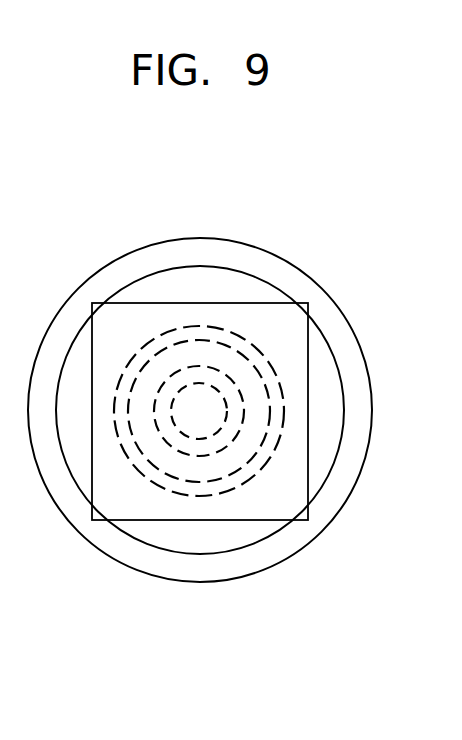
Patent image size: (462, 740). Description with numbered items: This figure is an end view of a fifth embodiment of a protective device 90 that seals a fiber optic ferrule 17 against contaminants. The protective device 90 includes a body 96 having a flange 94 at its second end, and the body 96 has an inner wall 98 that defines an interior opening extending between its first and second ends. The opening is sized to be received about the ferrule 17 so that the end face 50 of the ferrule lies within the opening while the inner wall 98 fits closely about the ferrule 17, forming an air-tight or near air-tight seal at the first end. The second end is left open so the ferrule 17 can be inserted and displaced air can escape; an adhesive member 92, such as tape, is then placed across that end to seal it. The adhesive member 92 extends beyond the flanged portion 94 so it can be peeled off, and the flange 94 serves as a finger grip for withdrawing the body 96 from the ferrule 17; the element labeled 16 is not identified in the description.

The housing 16 is at (172, 563).
The ferrule 17 is at (233, 417).
The end face 50 is at (210, 410).
The protective device 90 is at (258, 535).
The adhesive member 92 is at (288, 497).
The flange 94 is at (265, 457).
The body 96 is at (253, 390).
The inner wall 98 is at (182, 372).